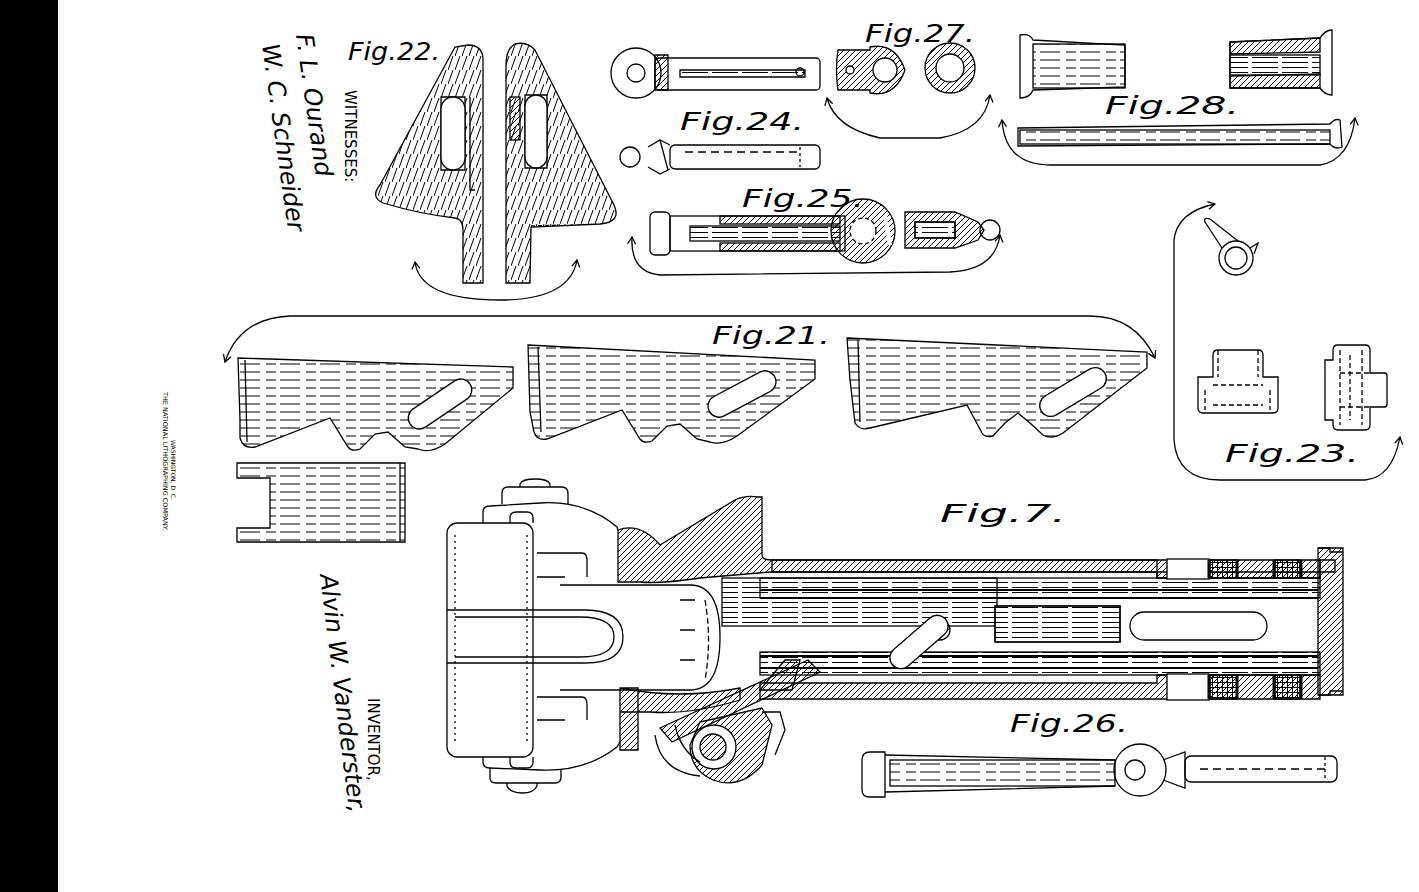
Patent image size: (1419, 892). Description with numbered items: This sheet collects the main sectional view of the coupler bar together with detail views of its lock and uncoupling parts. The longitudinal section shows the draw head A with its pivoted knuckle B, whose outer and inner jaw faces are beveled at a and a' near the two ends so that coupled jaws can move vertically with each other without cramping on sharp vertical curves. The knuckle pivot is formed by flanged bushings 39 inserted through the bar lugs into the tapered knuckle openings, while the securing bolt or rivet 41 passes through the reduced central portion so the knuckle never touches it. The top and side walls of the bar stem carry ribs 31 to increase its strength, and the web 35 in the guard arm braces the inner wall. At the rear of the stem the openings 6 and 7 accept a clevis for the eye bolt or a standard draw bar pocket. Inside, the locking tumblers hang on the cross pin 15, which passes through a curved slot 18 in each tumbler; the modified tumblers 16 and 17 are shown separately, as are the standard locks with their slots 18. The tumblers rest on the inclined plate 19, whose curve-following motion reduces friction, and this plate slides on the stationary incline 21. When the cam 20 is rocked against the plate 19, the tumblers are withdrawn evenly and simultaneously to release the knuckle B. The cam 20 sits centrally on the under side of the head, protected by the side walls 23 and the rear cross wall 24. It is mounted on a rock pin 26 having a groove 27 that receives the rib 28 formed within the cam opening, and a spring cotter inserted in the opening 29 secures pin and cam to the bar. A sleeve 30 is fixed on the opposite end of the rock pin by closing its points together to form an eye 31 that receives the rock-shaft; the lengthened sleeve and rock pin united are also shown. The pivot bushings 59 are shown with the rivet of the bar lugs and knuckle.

In FIG. 7, the opening 6 is at (1192, 570).
In FIG. 7, the opening 7 is at (1283, 562).
In FIG. 7, the cross pin 15 is at (945, 620).
In FIG. 22, the tumbler 16 is at (402, 165).
In FIG. 22, the tumbler 17 is at (572, 130).
In FIG. 21, the curved slot 18 is at (458, 386).
In FIG. 7, the curved slot 18 is at (895, 648).
In FIG. 21, the inclined plate 19 is at (326, 527).
In FIG. 7, the inclined plate 19 is at (770, 690).
In FIG. 23, the cam 20 is at (1228, 232).
In FIG. 7, the cam 20 is at (675, 758).
In FIG. 7, the stationary incline 21 is at (790, 698).
In FIG. 7, the side walls 23 is at (720, 778).
In FIG. 7, the rear cross wall 24 is at (772, 740).
In FIG. 24, the rock pin 26 is at (760, 42).
In FIG. 7, the rock pin 26 is at (735, 755).
In FIG. 26, the rock pin 26 is at (1262, 776).
In FIG. 24, the groove 27 is at (706, 70).
In FIG. 23, the rib 28 is at (1226, 255).
In FIG. 7, the rib 28 is at (705, 762).
In FIG. 24, the opening 29 is at (800, 67).
In FIG. 26, the opening 29 is at (1326, 758).
In FIG. 25, the sleeve 30 is at (772, 231).
In FIG. 26, the sleeve 30 is at (1025, 775).
In FIG. 24, the eye 31 is at (642, 70).
In FIG. 7, the eye 31 is at (1040, 608).
In FIG. 26, the eye 31 is at (1150, 766).
In FIG. 7, the web 35 is at (716, 650).
In FIG. 7, the bushings 39 is at (560, 488).
In FIG. 28, the securing bolt or rivet 41 is at (1185, 136).
In FIG. 7, the securing bolt or rivet 41 is at (540, 480).
In FIG. 28, the sleeve 59 is at (1062, 82).
In FIG. 7, the beveled face a is at (519, 643).
In FIG. 7, the beveled face a' is at (601, 636).
In FIG. 7, the draw head A is at (640, 552).
In FIG. 7, the knuckle B is at (468, 688).